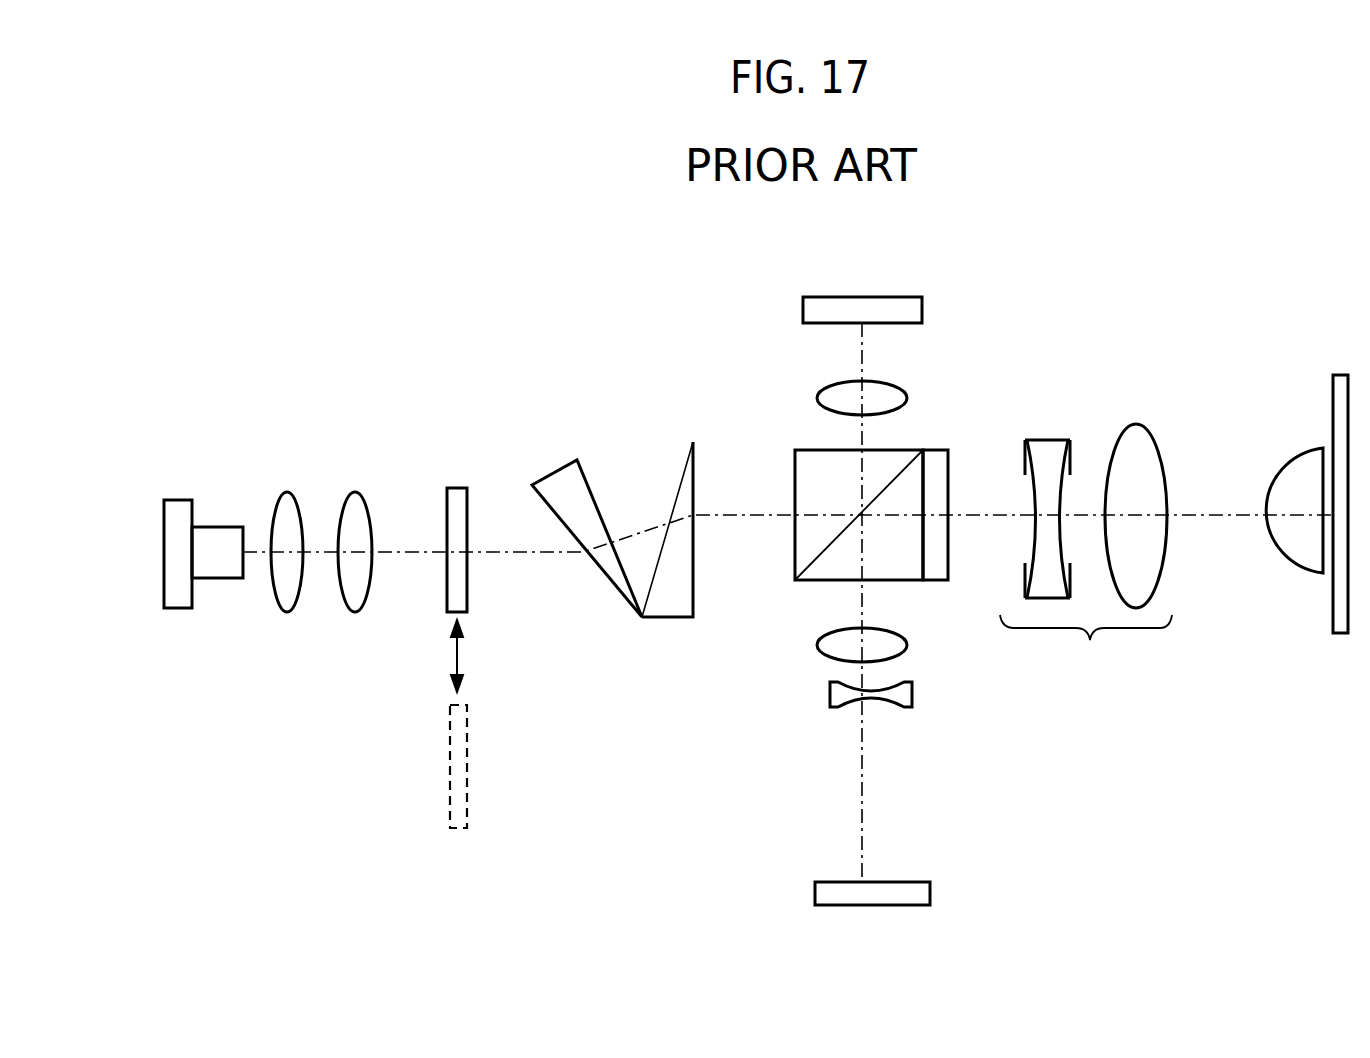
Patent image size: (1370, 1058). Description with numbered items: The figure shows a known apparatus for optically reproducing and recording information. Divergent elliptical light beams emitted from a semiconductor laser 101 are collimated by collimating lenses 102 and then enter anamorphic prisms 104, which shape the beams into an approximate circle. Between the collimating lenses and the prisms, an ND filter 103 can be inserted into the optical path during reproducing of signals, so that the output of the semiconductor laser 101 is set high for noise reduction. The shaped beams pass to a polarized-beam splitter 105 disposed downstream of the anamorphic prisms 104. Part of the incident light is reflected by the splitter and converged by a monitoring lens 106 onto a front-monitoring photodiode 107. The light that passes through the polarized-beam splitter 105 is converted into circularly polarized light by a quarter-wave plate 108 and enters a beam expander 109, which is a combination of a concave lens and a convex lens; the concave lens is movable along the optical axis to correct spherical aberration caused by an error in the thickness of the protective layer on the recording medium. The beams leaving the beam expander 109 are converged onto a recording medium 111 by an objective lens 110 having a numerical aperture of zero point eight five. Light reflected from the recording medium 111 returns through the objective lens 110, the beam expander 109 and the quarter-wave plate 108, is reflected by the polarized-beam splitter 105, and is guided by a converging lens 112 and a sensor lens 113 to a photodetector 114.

The semiconductor laser 101 is at (188, 498).
The collimating lenses 102 is at (318, 483).
The ND filter 103 is at (460, 487).
The anamorphic prisms 104 is at (625, 458).
The polarized-beam splitter 105 is at (804, 448).
The monitoring lens 106 is at (904, 390).
The front-monitoring photodiode 107 is at (925, 297).
The quarter-wave plate 108 is at (941, 582).
The beam expander 109 is at (1086, 553).
The objective lens 110 is at (1272, 550).
The recording medium 111 is at (1341, 636).
The converging lens 112 is at (822, 645).
The sensor lens 113 is at (830, 697).
The photodetector 114 is at (814, 893).